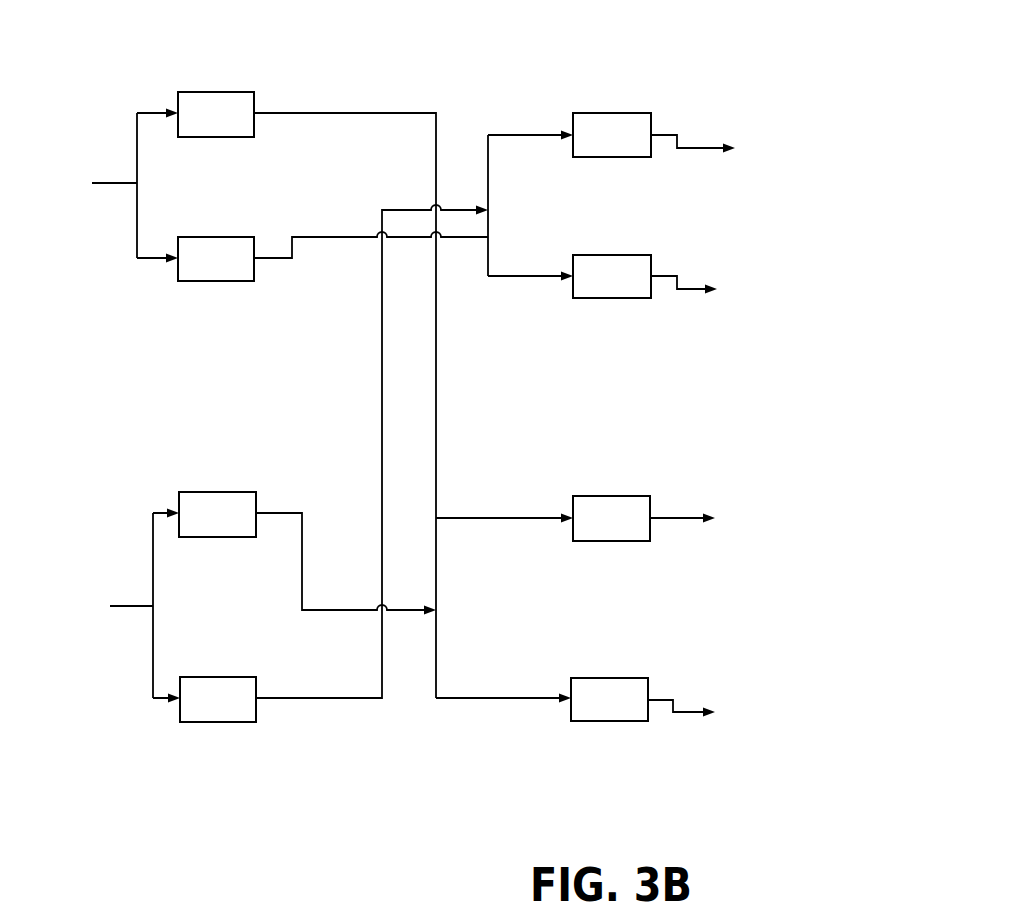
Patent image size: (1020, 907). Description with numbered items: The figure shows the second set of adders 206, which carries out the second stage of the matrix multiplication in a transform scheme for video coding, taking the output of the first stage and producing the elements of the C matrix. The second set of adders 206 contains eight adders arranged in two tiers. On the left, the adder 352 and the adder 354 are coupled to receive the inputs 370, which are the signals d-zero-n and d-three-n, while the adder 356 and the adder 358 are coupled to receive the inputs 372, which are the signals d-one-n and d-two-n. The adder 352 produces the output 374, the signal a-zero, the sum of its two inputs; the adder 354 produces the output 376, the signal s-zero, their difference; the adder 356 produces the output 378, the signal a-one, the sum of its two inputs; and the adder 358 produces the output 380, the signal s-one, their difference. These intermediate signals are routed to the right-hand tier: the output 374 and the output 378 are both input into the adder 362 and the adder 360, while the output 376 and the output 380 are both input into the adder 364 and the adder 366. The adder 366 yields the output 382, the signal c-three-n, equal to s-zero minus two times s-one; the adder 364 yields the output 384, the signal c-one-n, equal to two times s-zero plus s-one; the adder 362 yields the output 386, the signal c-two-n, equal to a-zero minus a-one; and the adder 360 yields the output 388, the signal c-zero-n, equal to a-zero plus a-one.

The second set of adders 206 is at (852, 136).
The adder A8 352 is at (210, 91).
The adder A9 354 is at (219, 282).
The adder A10 356 is at (212, 492).
The adder A11 358 is at (213, 676).
The adder A12 360 is at (604, 678).
The adder A13 362 is at (605, 496).
The adder A14 364 is at (613, 299).
The adder A15 366 is at (605, 113).
The inputs 370 is at (48, 132).
The inputs 372 is at (62, 571).
The output 374 is at (302, 80).
The output 376 is at (278, 220).
The output 378 is at (268, 476).
The output 380 is at (291, 735).
The output 382 is at (680, 95).
The output 384 is at (703, 255).
The output 386 is at (678, 466).
The output 388 is at (670, 656).